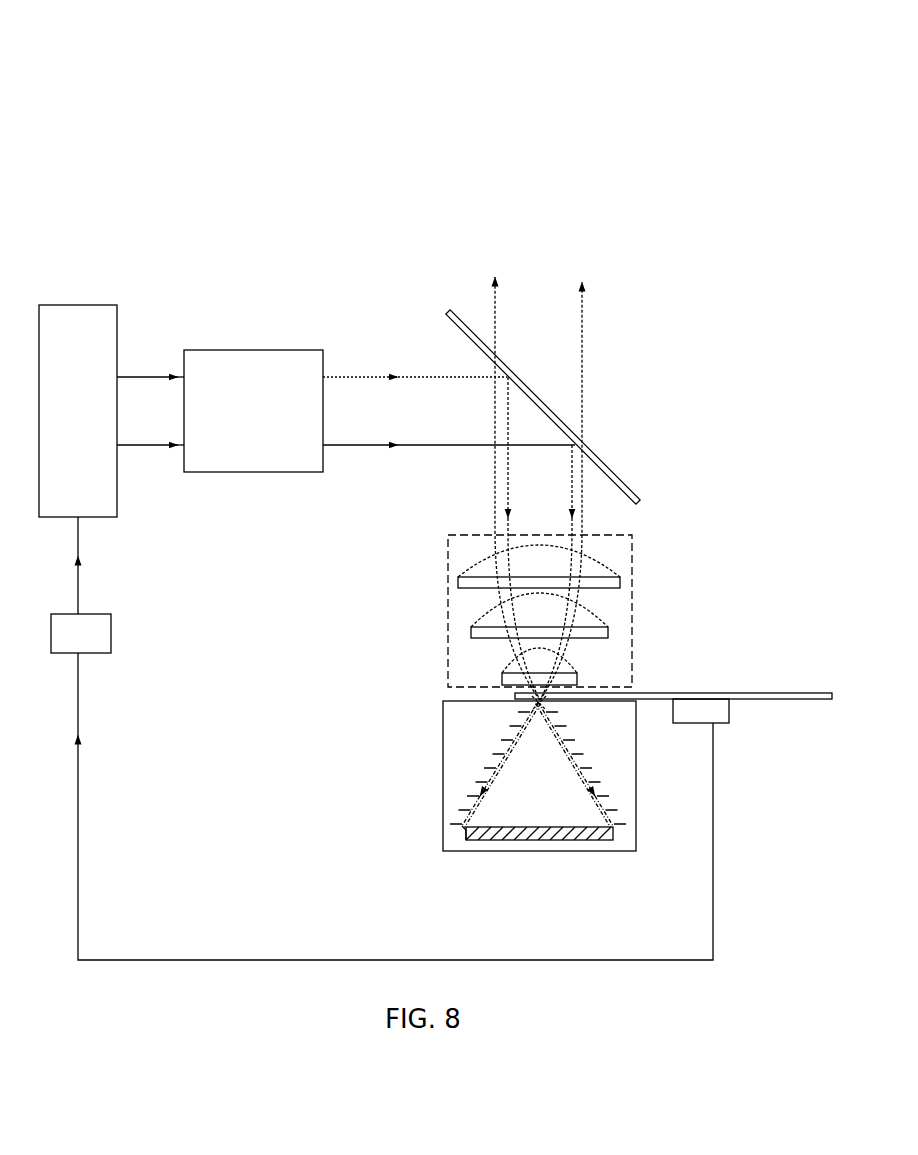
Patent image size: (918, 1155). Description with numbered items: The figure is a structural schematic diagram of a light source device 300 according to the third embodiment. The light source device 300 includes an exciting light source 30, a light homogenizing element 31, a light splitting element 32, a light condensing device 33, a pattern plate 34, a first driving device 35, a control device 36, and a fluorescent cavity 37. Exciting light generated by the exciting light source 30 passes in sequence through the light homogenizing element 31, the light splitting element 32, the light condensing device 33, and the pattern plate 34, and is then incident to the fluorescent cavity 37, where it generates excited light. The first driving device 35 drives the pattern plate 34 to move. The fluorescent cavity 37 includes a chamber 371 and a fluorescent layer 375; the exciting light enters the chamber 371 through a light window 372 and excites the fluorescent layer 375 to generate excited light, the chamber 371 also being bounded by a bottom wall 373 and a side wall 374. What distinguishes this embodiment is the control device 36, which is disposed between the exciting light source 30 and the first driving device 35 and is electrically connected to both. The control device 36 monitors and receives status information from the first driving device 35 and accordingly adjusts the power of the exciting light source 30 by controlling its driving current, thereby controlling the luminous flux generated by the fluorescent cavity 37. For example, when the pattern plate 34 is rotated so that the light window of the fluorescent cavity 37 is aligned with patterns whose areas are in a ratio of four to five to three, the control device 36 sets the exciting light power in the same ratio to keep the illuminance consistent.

The light source device 300 is at (421, 78).
The exciting light source 30 is at (64, 315).
The light homogenizing element 31 is at (236, 362).
The light splitting element 32 is at (600, 462).
The light condensing device 33 is at (467, 535).
The pattern plate 34 is at (710, 697).
The first driving device 35 is at (722, 712).
The control device 36 is at (95, 625).
The fluorescent cavity 37 is at (443, 785).
The chamber 371 is at (525, 820).
The light window 372 is at (535, 703).
The bottom wall 373 is at (487, 840).
The side wall 374 is at (490, 765).
The fluorescent layer 375 is at (590, 834).